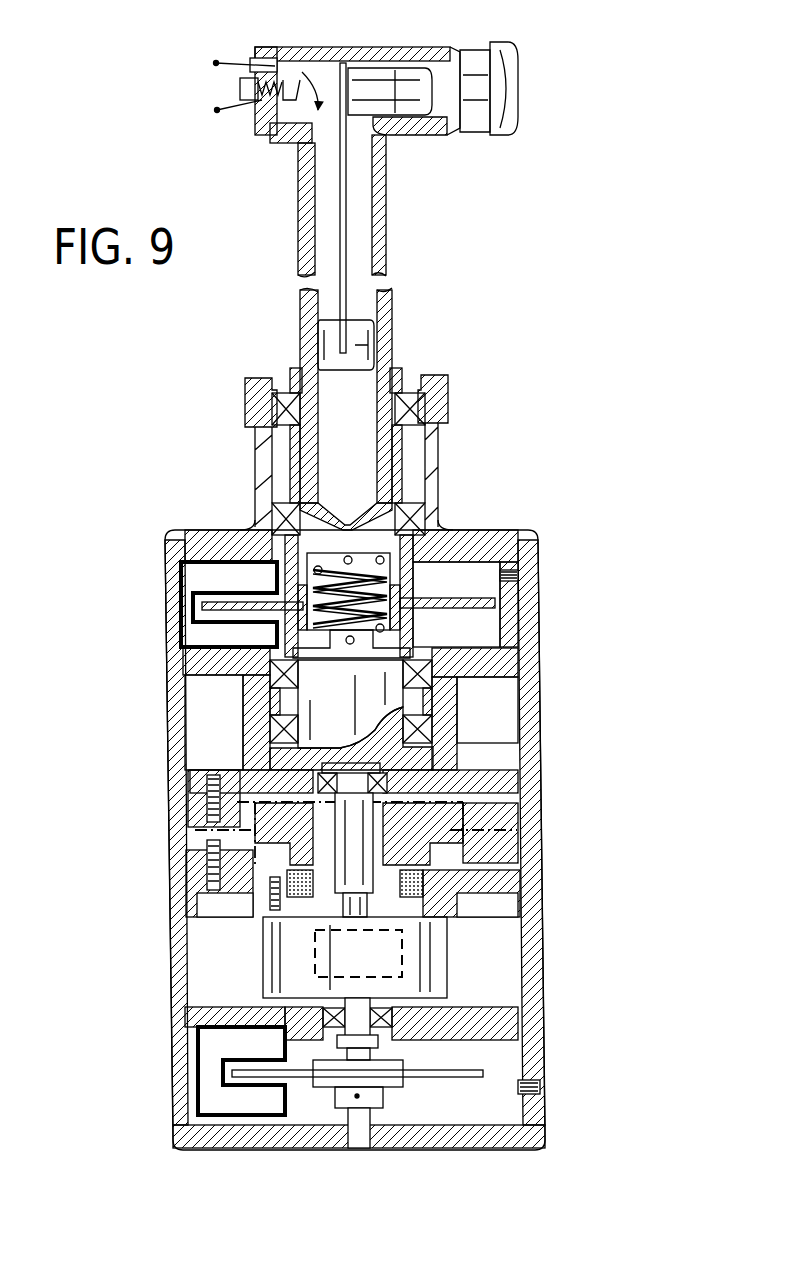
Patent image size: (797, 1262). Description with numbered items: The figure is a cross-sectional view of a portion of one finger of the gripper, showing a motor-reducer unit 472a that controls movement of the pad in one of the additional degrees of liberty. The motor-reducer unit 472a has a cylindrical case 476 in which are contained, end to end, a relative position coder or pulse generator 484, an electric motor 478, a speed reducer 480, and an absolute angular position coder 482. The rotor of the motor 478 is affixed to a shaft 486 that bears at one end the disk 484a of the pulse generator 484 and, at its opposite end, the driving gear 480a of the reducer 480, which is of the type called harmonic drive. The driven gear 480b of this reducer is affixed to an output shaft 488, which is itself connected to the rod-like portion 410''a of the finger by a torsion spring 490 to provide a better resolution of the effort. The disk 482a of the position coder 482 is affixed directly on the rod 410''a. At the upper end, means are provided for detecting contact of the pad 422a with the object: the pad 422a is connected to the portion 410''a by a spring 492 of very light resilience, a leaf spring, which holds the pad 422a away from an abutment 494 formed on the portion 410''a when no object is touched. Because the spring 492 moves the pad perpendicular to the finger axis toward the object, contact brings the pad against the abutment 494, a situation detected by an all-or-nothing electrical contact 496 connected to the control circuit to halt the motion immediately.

The rod-like portion of the finger 410''a is at (422, 332).
The pad 422a is at (505, 92).
The motor-reducer unit 472a is at (160, 717).
The cylindrical case 476 is at (168, 768).
The electric motor 478 is at (425, 950).
The speed reducer 480 is at (415, 846).
The driving gear 480a is at (470, 890).
The driven gear 480b is at (517, 802).
The absolute angular position coder 482 is at (458, 588).
The disk of the position coder 482a is at (480, 610).
The relative position coder 484 is at (468, 1054).
The disk of the pulse generator 484a is at (490, 1071).
The shaft 486 is at (355, 870).
The output shaft 488 is at (345, 690).
The torsion spring 490 is at (300, 590).
The spring 492 is at (340, 250).
The abutment 494 is at (440, 100).
The all-or-nothing electrical contact 496 is at (285, 125).